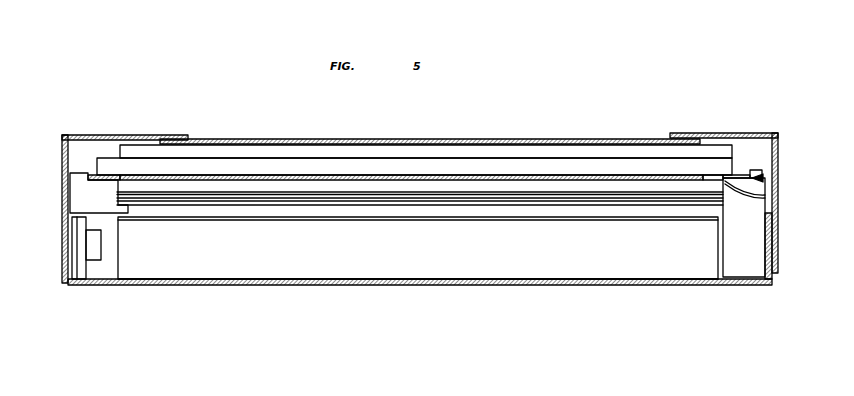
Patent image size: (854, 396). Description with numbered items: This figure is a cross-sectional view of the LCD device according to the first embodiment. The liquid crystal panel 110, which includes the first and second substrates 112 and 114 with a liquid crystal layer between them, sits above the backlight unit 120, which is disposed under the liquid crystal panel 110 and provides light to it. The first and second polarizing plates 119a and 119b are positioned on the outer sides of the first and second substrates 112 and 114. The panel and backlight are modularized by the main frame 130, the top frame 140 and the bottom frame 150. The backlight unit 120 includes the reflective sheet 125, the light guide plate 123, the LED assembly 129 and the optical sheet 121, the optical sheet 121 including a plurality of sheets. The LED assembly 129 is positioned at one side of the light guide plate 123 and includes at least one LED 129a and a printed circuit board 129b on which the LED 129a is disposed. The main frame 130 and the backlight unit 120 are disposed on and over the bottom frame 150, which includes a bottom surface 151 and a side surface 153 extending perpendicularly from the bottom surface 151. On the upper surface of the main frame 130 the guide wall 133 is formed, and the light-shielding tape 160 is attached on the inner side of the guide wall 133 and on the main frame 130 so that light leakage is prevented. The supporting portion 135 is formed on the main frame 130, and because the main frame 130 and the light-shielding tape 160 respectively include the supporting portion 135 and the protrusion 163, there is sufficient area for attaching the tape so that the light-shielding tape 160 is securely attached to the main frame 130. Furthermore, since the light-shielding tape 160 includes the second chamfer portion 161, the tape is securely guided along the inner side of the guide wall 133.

The liquid crystal panel 110 is at (414, 129).
The first substrate 112 is at (365, 163).
The second substrate 114 is at (335, 153).
The first polarizing plate 119a is at (421, 177).
The second polarizing plate 119b is at (403, 141).
The backlight unit 120 is at (388, 276).
The optical sheet 121 is at (181, 281).
The light guide plate 123 is at (145, 270).
The reflective sheet 125 is at (170, 204).
The LED assembly 129 is at (84, 278).
The LED 129a is at (90, 262).
The printed circuit board 129b is at (80, 268).
The main frame 130 is at (80, 195).
The guide wall 133 is at (764, 174).
The supporting portion 135 is at (770, 203).
The top frame 140 is at (103, 134).
The bottom frame 150 is at (446, 275).
The bottom surface 151 is at (752, 286).
The side surface 153 is at (780, 258).
The light-shielding tape 160 is at (90, 176).
The second chamfer portion 161 is at (768, 180).
The protrusion 163 is at (768, 197).